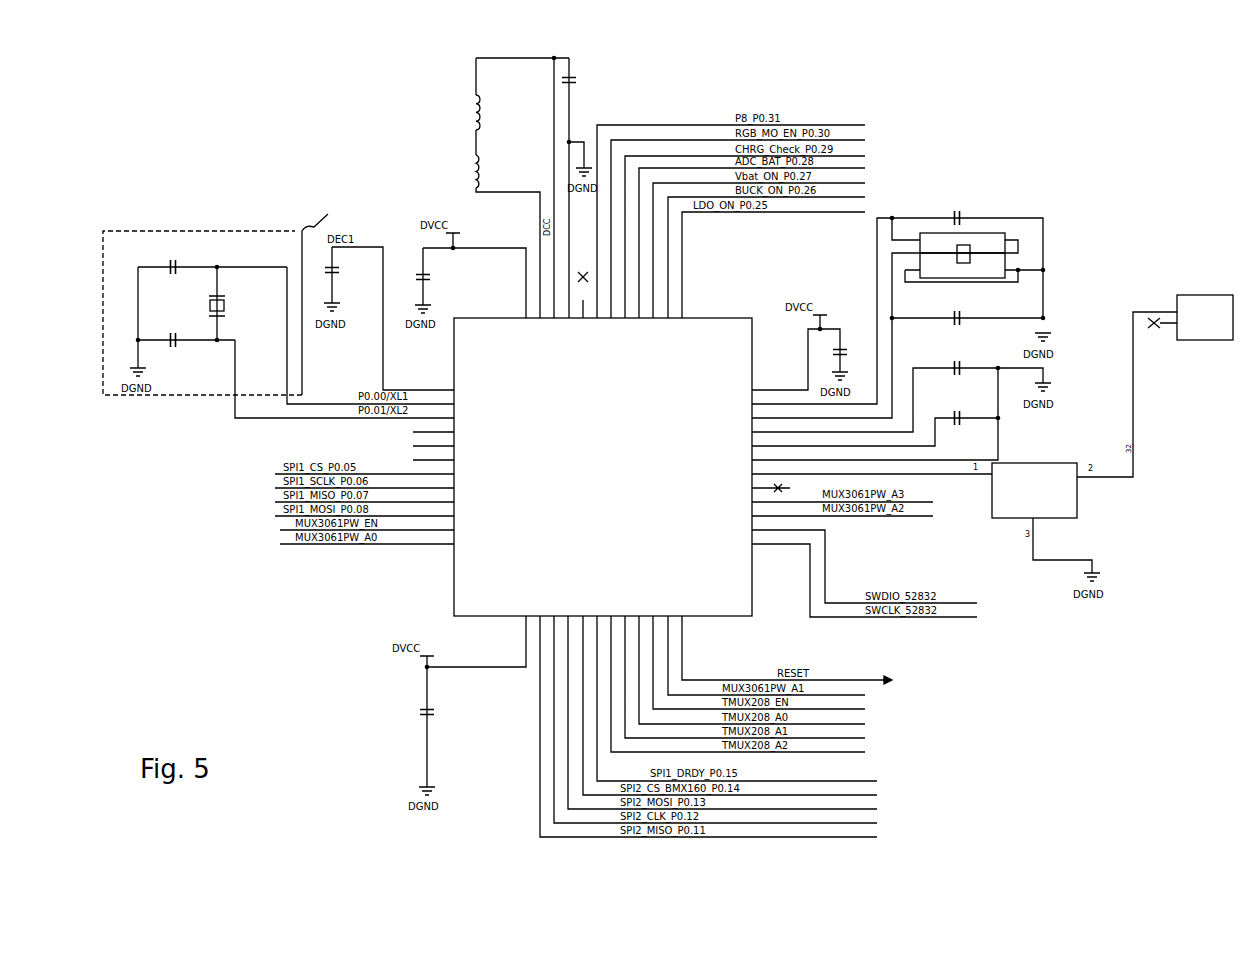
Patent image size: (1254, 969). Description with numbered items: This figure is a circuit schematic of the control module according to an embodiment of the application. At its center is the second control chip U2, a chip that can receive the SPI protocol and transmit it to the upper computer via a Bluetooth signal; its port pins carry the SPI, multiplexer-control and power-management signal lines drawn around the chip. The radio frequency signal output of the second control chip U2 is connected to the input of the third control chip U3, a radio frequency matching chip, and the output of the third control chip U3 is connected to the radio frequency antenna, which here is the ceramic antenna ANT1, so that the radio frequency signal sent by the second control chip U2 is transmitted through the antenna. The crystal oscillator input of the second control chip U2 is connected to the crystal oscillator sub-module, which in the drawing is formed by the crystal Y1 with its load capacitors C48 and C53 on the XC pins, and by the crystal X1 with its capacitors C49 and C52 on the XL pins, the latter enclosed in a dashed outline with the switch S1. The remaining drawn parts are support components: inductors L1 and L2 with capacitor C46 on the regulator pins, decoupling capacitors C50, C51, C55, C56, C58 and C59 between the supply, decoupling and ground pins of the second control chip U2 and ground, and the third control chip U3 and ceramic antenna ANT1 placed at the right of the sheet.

The second control chip U2 is at (601, 456).
The third control chip U3 is at (1034, 483).
The ceramic antenna ANT1 is at (1195, 311).
The 32 MHz crystal Y1 is at (962, 251).
The 32.768 kHz crystal X1 is at (225, 303).
The switch S1 is at (222, 298).
The inductor L1 is at (485, 112).
The inductor L2 is at (485, 171).
The capacitor C46 is at (579, 81).
The capacitor C48 is at (945, 207).
The capacitor C49 is at (172, 261).
The capacitor C50 is at (342, 270).
The capacitor C51 is at (433, 277).
The capacitor C52 is at (172, 335).
The capacitor C53 is at (939, 324).
The capacitor C55 is at (850, 352).
The capacitor C56 is at (940, 364).
The capacitor C58 is at (942, 414).
The capacitor C59 is at (437, 712).